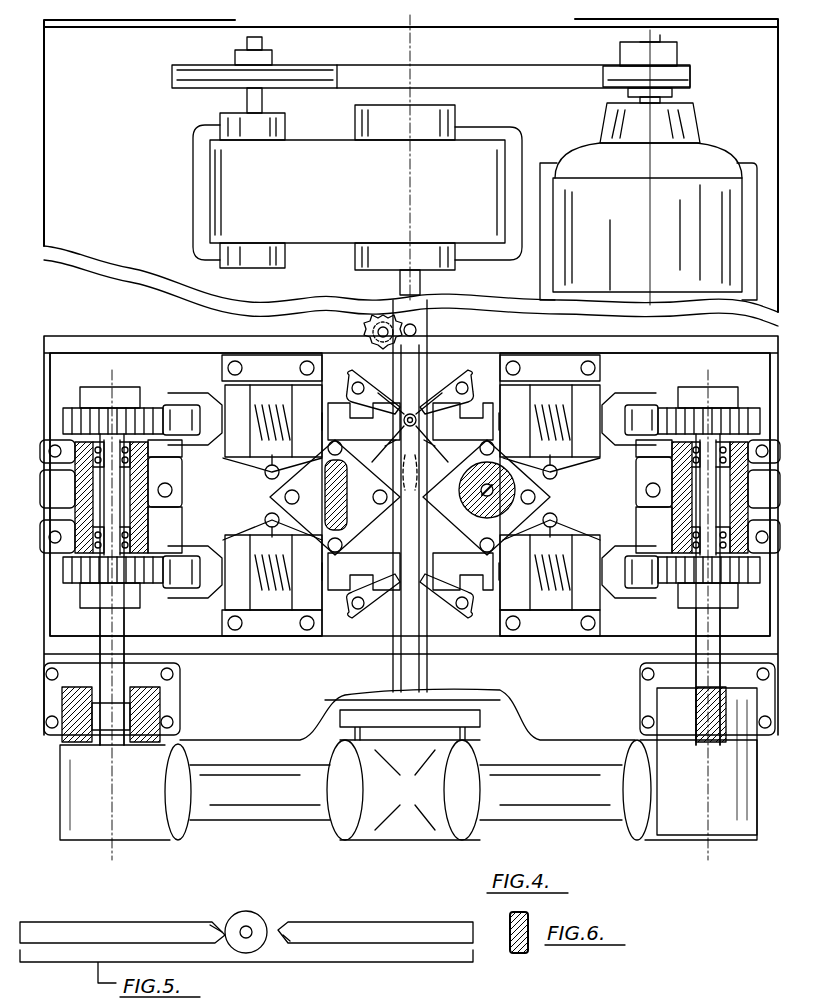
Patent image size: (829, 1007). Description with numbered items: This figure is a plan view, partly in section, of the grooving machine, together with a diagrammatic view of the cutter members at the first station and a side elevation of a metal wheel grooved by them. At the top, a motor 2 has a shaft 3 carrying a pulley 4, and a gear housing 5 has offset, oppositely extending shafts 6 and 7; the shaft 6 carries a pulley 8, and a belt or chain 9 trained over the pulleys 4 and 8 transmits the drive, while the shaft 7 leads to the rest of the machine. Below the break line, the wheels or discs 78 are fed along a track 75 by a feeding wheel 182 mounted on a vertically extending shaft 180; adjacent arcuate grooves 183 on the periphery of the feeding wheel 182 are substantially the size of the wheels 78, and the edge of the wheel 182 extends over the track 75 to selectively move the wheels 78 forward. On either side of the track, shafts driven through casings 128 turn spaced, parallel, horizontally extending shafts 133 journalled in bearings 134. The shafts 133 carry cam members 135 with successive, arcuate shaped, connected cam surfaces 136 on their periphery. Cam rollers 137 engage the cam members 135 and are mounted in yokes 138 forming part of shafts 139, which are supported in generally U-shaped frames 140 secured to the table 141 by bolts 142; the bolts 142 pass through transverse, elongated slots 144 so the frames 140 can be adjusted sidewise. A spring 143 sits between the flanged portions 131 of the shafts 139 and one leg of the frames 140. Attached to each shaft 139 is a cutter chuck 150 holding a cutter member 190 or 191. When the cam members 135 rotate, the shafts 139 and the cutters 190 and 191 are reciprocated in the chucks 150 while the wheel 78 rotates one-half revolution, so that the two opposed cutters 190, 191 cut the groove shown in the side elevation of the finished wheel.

In FIG. 4, the motor 2 is at (717, 150).
In FIG. 4, the shaft 3 is at (628, 98).
In FIG. 4, the pulley 4 is at (688, 69).
In FIG. 4, the gear housing 5 is at (215, 188).
In FIG. 4, the shaft 6 is at (263, 100).
In FIG. 4, the shaft 7 is at (424, 290).
In FIG. 4, the pulley 8 is at (306, 66).
In FIG. 4, the belt or chain 9 is at (470, 72).
In FIG. 4, the track 75 is at (428, 655).
In FIG. 4, the wheels or discs 78 is at (425, 405).
In FIG. 4, the casings 128 is at (268, 822).
In FIG. 4, the flanged portions 131 is at (256, 420).
In FIG. 4, the shafts 133 is at (126, 635).
In FIG. 4, the bearings 134 is at (740, 450).
In FIG. 4, the cam members 135 is at (70, 406).
In FIG. 4, the cam surfaces 136 is at (150, 406).
In FIG. 4, the cam rollers 137 is at (182, 405).
In FIG. 4, the yokes 138 is at (197, 443).
In FIG. 4, the shafts 139 is at (226, 455).
In FIG. 4, the frames 140 is at (260, 355).
In FIG. 4, the table 141 is at (215, 355).
In FIG. 4, the bolts 142 is at (300, 370).
In FIG. 4, the spring 143 is at (412, 500).
In FIG. 4, the slots 144 is at (404, 497).
In FIG. 4, the cutter chuck 150 is at (338, 397).
In FIG. 4, the shaft 180 is at (372, 342).
In FIG. 4, the feeding wheel 182 is at (366, 326).
In FIG. 4, the grooves 183 is at (372, 318).
In FIG. 4, the cutter member 190 is at (430, 540).
In FIG. 5, the cutter member 190 is at (176, 922).
In FIG. 4, the cutter member 191 is at (392, 445).